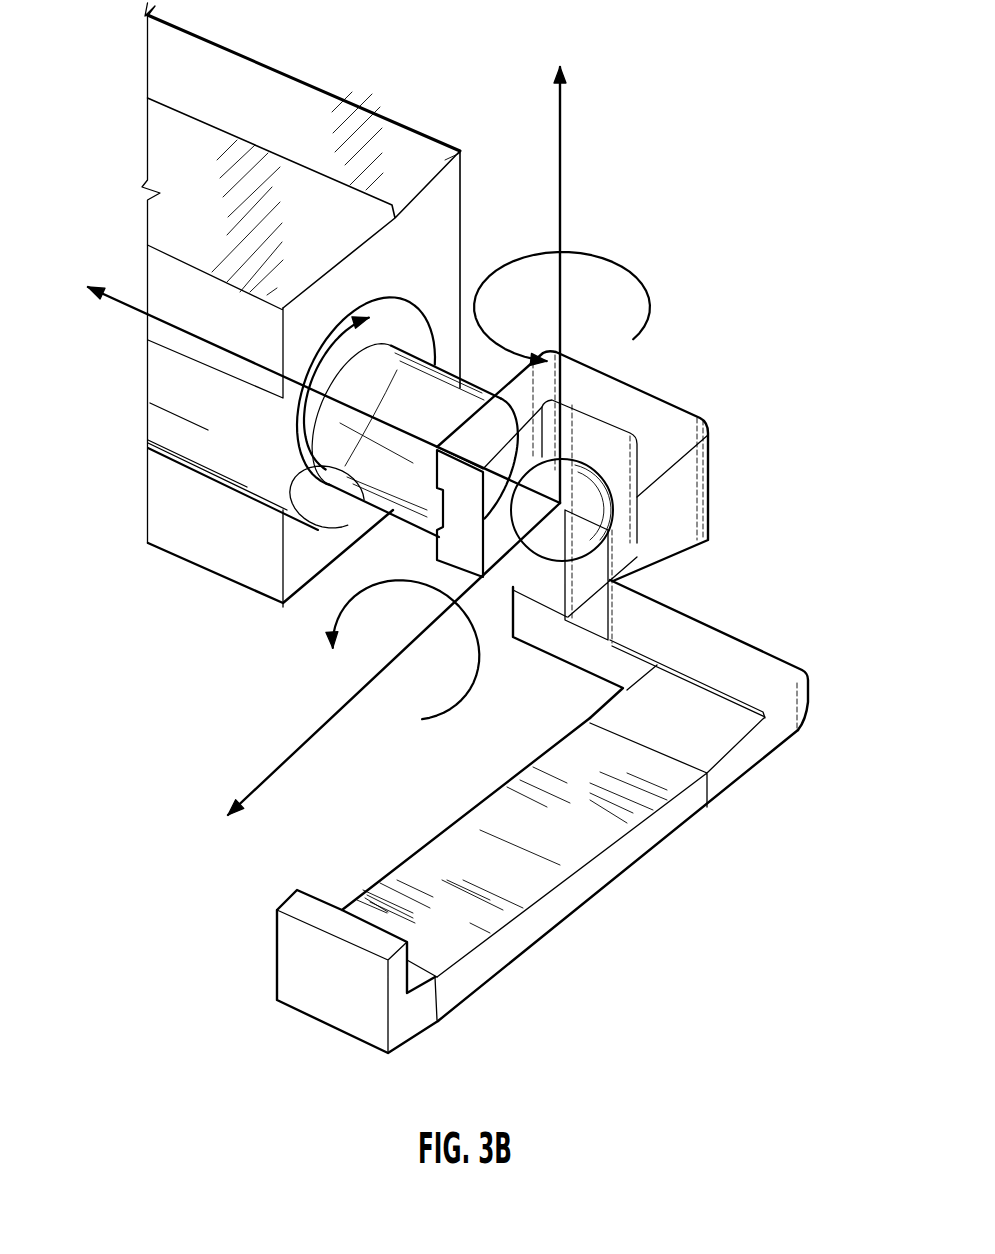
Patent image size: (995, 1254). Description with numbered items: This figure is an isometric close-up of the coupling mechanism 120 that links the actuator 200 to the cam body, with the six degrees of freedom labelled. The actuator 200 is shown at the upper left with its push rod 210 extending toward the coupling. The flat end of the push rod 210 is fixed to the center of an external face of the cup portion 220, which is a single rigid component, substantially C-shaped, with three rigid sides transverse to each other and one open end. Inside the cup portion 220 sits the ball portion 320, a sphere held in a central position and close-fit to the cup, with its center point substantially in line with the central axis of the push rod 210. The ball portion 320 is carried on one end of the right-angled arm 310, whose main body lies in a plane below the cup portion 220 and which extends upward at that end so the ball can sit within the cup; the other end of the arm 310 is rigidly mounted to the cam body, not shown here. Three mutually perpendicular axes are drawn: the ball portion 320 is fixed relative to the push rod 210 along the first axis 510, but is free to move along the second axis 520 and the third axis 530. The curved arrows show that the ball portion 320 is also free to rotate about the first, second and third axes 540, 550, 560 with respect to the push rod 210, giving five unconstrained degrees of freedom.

The coupling mechanism 120 is at (542, 699).
The actuator 200 is at (315, 100).
The push rod 210 is at (367, 508).
The cup portion 220 is at (579, 497).
The right-angled arm 310 is at (572, 856).
The ball portion 320 is at (547, 530).
The first axis 510 is at (177, 327).
The second axis 520 is at (560, 167).
The third axis 530 is at (257, 793).
The rotation about the first axis 540 is at (308, 468).
The rotation about the second axis 550 is at (583, 250).
The rotation about the third axis 560 is at (423, 721).